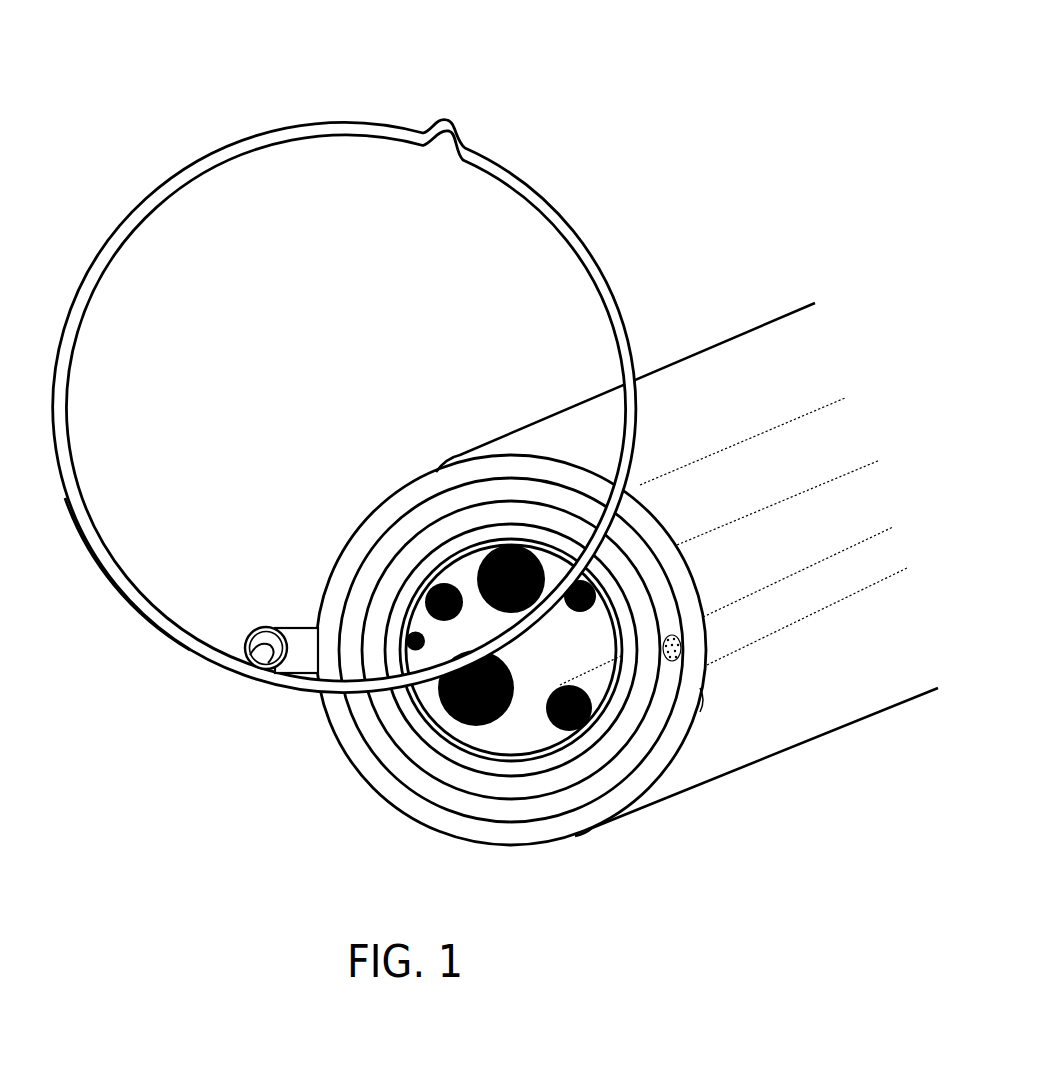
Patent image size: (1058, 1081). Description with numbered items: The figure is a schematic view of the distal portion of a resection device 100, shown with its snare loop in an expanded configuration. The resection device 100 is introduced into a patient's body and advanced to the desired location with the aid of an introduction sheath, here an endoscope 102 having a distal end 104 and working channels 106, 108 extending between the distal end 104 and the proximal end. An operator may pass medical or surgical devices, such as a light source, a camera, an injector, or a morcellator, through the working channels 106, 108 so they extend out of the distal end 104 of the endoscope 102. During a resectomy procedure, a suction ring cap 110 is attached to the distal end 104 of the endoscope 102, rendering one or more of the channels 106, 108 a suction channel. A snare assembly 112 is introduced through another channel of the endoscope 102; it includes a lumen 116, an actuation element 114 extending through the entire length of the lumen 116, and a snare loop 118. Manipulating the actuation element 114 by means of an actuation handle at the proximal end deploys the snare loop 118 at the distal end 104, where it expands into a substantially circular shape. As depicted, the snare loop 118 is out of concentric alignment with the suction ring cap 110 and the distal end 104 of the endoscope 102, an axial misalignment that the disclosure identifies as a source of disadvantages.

The resection device 100 is at (476, 458).
The endoscope 102 is at (682, 330).
The distal end 104 is at (661, 827).
The working channel 106 is at (477, 557).
The working channel 108 is at (462, 727).
The suction ring cap 110 is at (366, 478).
The snare assembly 112 is at (142, 264).
The actuation element 114 is at (253, 635).
The lumen 116 is at (298, 628).
The snare loop 118 is at (112, 573).